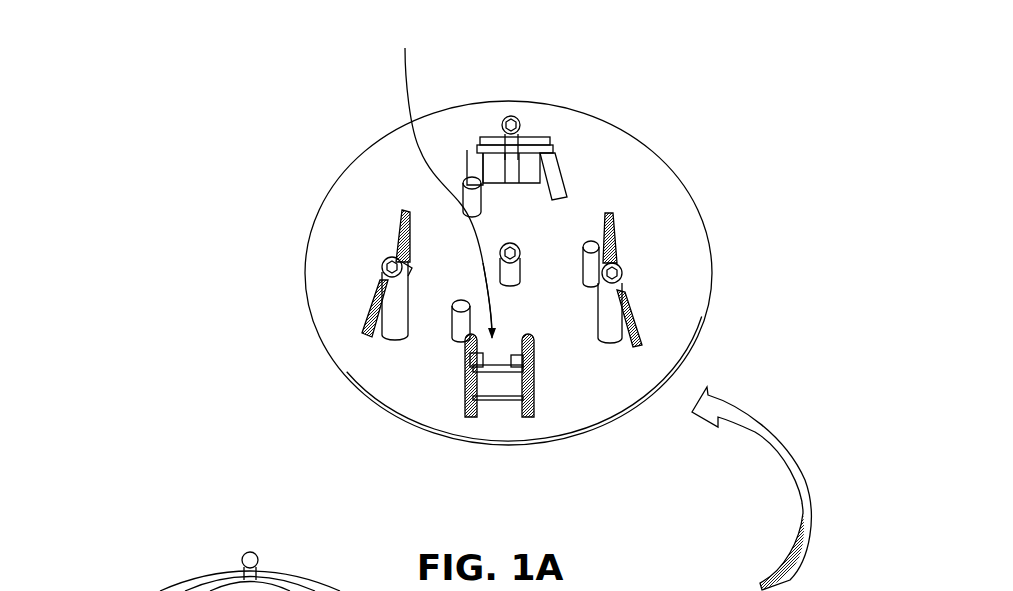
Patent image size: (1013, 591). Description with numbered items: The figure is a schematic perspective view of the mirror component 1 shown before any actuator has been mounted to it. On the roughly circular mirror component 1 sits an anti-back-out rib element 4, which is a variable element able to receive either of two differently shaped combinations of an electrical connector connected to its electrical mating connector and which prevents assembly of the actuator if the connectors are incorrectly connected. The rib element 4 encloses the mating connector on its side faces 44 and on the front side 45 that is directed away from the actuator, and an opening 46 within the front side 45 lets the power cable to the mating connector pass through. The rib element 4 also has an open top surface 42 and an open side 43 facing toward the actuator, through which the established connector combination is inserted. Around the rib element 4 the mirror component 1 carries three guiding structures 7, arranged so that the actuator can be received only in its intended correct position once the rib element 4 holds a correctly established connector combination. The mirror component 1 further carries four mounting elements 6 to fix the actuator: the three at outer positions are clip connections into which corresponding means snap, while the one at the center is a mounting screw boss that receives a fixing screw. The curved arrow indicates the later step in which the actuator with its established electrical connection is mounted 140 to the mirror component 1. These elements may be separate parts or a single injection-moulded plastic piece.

The mirror component 1 is at (275, 103).
The anti-back-out rib element 4 is at (443, 400).
The mounting elements 6 is at (527, 125).
The guiding structures 7 is at (567, 160).
The open top surface 42 is at (427, 173).
The open side 43 is at (405, 52).
The side faces 44 is at (537, 360).
The front side 45 is at (502, 388).
The opening 46 is at (495, 358).
The mounting of the actuator 140 is at (786, 488).